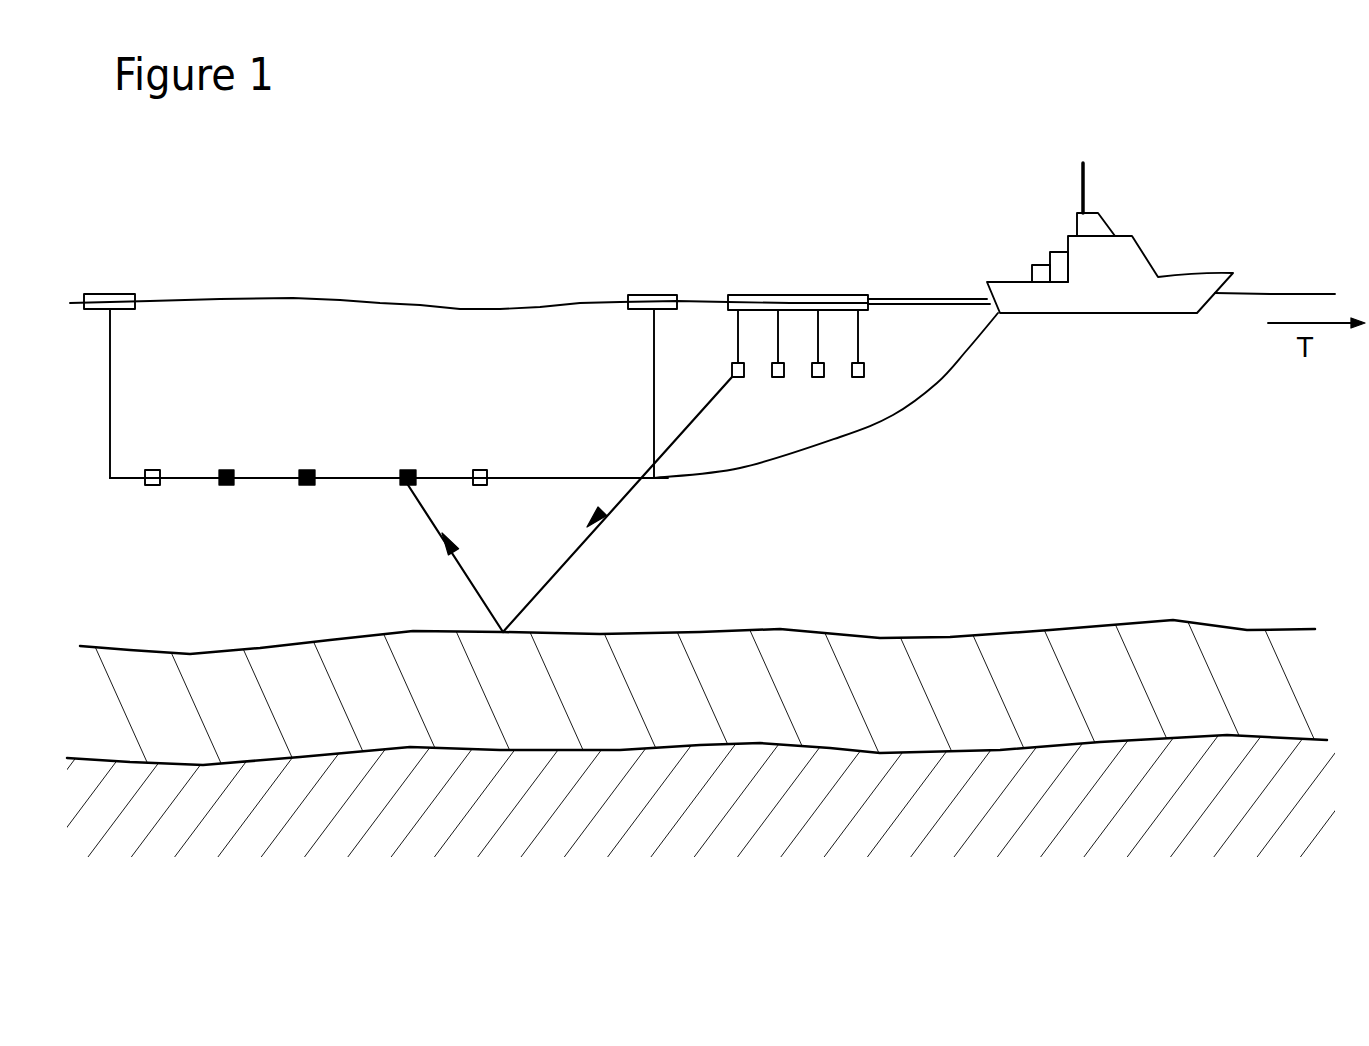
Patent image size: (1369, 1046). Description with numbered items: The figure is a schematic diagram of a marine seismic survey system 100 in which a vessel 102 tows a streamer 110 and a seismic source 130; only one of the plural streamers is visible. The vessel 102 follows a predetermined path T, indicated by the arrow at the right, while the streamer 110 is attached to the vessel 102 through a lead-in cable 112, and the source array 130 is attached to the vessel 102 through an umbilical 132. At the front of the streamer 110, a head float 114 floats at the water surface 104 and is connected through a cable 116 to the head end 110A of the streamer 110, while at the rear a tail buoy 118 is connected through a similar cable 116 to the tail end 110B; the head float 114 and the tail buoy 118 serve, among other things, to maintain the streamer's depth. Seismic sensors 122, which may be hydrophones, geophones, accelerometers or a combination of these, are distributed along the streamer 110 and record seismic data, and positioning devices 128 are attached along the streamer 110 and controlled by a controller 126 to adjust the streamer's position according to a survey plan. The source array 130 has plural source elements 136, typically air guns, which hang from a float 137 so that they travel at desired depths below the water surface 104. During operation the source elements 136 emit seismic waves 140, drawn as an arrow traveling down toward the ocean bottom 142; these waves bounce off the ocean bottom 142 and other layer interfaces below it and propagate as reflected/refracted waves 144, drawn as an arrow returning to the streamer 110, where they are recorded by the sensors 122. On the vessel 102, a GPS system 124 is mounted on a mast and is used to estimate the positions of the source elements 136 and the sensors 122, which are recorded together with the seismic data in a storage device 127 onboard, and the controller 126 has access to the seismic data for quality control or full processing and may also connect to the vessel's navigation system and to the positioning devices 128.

The seismic survey system 100 is at (702, 153).
The vessel 102 is at (1193, 248).
The water surface 104 is at (422, 300).
The streamer 110 is at (553, 477).
The head end 110A is at (652, 480).
The tail end 110B is at (120, 480).
The lead-in cable 112 is at (878, 430).
The head float 114 is at (640, 295).
The cable 116 is at (110, 358).
The tail buoy 118 is at (95, 293).
The seismic sensors 122 is at (223, 485).
The GPS systems 124 is at (1085, 173).
The controller 126 is at (1060, 258).
The storage device 127 is at (1038, 265).
The positioning devices 128 is at (151, 470).
The seismic source 130 is at (867, 211).
The umbilical 132 is at (907, 300).
The source elements 136 is at (777, 377).
The float 137 is at (793, 295).
The seismic waves 140 is at (556, 575).
The ocean bottom 142 is at (888, 638).
The reflected/refracted waves 144 is at (478, 595).